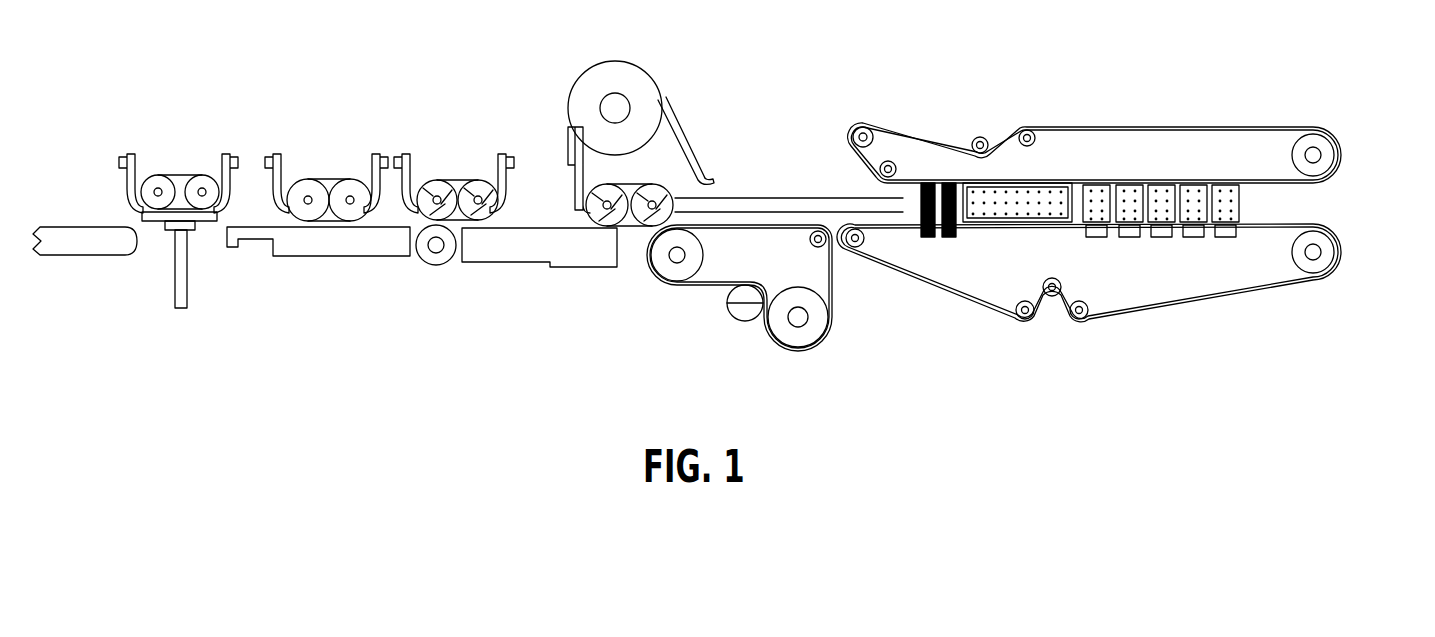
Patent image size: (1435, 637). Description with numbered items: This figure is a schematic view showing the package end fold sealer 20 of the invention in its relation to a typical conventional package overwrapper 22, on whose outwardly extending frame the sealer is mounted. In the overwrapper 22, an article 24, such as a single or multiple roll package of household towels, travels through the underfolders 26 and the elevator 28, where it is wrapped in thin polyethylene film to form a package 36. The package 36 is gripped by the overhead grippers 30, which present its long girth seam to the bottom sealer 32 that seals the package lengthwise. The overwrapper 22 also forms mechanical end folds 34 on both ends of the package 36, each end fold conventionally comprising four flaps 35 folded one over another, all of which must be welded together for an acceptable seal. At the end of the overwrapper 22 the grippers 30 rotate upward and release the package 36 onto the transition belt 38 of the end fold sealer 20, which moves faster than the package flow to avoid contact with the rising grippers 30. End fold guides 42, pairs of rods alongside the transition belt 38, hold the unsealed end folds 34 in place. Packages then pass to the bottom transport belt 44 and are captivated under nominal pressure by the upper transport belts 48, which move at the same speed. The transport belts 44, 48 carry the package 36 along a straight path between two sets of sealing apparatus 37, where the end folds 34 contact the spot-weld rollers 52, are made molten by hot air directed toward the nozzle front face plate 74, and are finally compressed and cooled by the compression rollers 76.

The package end fold sealer 20 is at (1098, 100).
The package overwrapper 22 is at (398, 322).
The article 24 is at (158, 175).
The underfolders 26 is at (80, 257).
The elevator 28 is at (188, 278).
The overhead grippers 30 is at (413, 177).
The bottom sealer 32 is at (438, 265).
The mechanical end folds 34 is at (423, 178).
The flaps 35 is at (648, 222).
The package 36 is at (663, 183).
The sealing apparatus 37 is at (1243, 203).
The transition belt 38 is at (702, 288).
The end fold guides 42 is at (812, 198).
The bottom transport belt 44 is at (1102, 327).
The upper transport belts 48 is at (1255, 127).
The spot-weld rollers 52 is at (945, 237).
The nozzle front face plate 74 is at (1015, 222).
The compression rollers 76 is at (1225, 237).